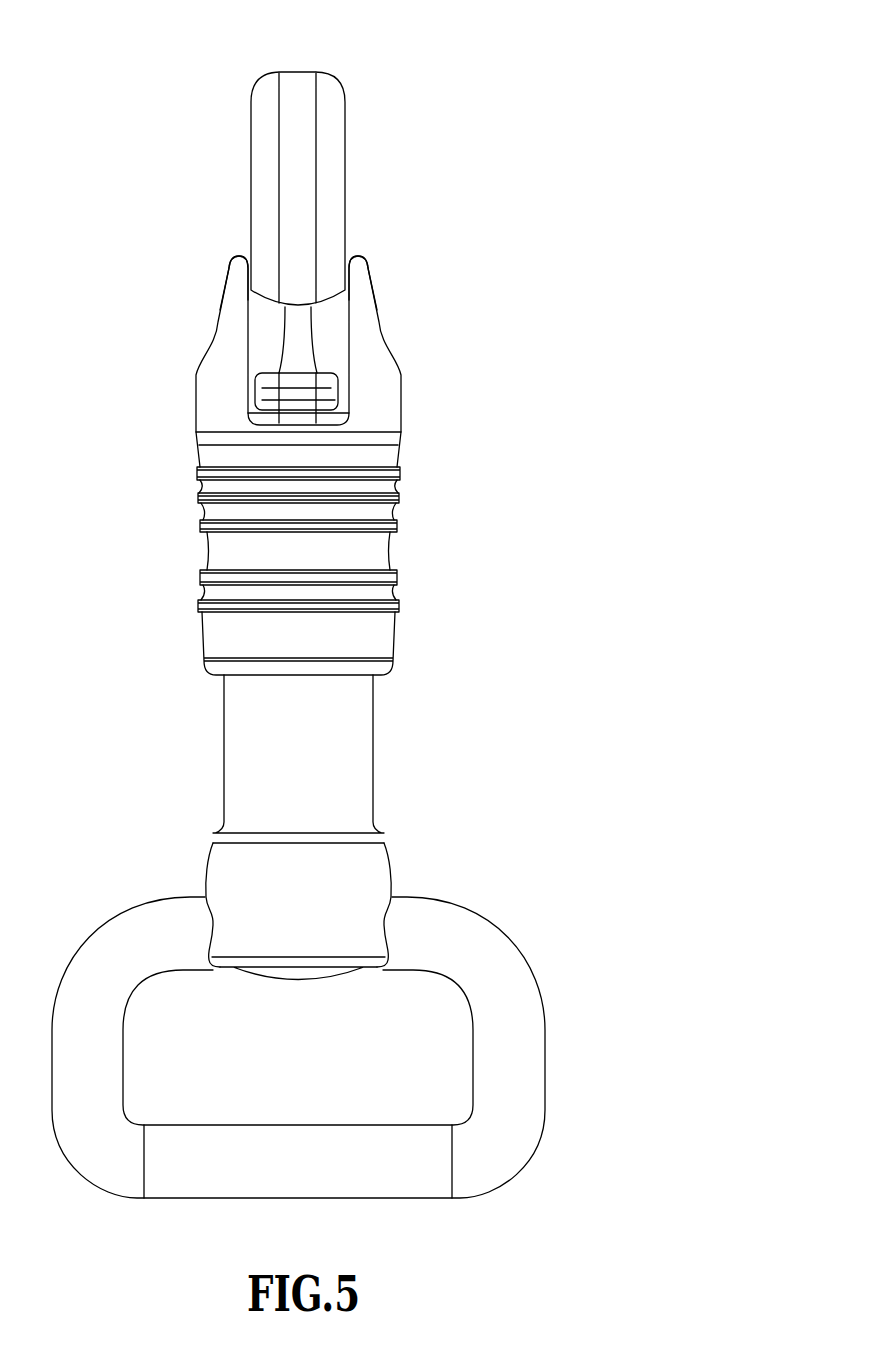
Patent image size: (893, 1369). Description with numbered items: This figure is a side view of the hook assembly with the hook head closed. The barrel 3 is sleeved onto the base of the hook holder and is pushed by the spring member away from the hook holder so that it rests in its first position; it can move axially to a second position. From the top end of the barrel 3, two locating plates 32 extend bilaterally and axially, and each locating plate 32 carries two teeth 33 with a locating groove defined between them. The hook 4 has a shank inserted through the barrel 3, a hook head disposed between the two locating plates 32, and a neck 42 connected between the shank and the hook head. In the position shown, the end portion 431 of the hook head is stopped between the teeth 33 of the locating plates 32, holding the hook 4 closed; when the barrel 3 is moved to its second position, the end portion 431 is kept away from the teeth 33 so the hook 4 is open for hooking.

The barrel 3 is at (352, 584).
The locating plate 32 is at (352, 328).
The teeth 33 is at (234, 285).
The hook 4 is at (295, 213).
The neck 42 is at (293, 405).
The end portion 431 is at (291, 306).